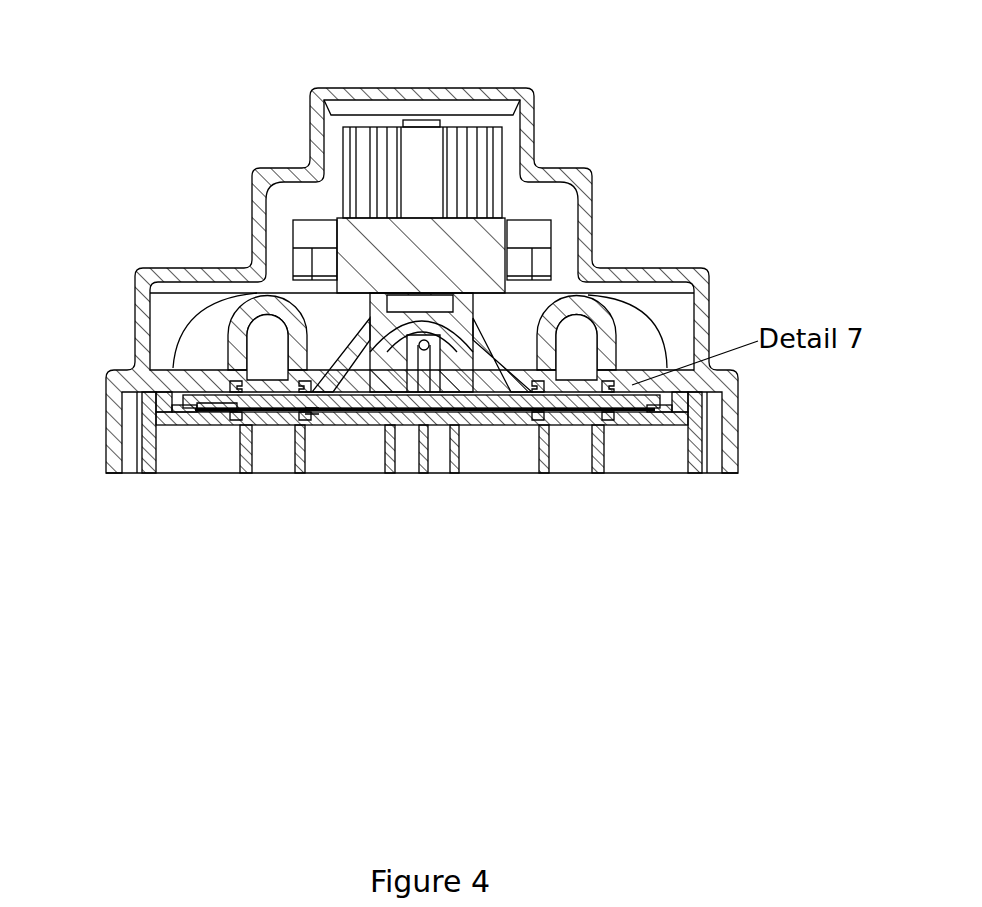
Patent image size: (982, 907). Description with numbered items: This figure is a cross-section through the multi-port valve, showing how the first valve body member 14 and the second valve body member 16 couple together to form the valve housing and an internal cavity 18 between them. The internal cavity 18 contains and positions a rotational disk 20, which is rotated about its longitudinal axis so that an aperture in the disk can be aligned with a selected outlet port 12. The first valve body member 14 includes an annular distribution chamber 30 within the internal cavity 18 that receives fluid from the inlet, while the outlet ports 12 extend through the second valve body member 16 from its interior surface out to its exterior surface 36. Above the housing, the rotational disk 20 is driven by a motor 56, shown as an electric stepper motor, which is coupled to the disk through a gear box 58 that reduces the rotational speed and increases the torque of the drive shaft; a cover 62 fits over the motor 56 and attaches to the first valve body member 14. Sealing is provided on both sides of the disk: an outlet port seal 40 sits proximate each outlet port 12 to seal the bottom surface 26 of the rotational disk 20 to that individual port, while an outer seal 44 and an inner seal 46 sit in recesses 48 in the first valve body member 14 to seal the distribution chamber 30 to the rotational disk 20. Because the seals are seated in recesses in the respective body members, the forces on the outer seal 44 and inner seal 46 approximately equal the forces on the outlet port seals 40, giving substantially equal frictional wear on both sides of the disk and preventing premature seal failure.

The outlet port 12 is at (265, 455).
The first valve body member 14 is at (153, 378).
The second valve body member 16 is at (147, 477).
The internal cavity 18 is at (650, 400).
The rotational disk 20 is at (421, 344).
The bottom surface 26 is at (660, 413).
The annular distribution chamber 30 is at (265, 345).
The exterior surface 36 is at (547, 475).
The outlet port seal 40 is at (305, 427).
The outer seal 44 is at (217, 423).
The inner seal 46 is at (317, 413).
The recess 48 is at (230, 382).
The motor 56 is at (415, 160).
The gear box 58 is at (535, 232).
The cover 62 is at (312, 92).